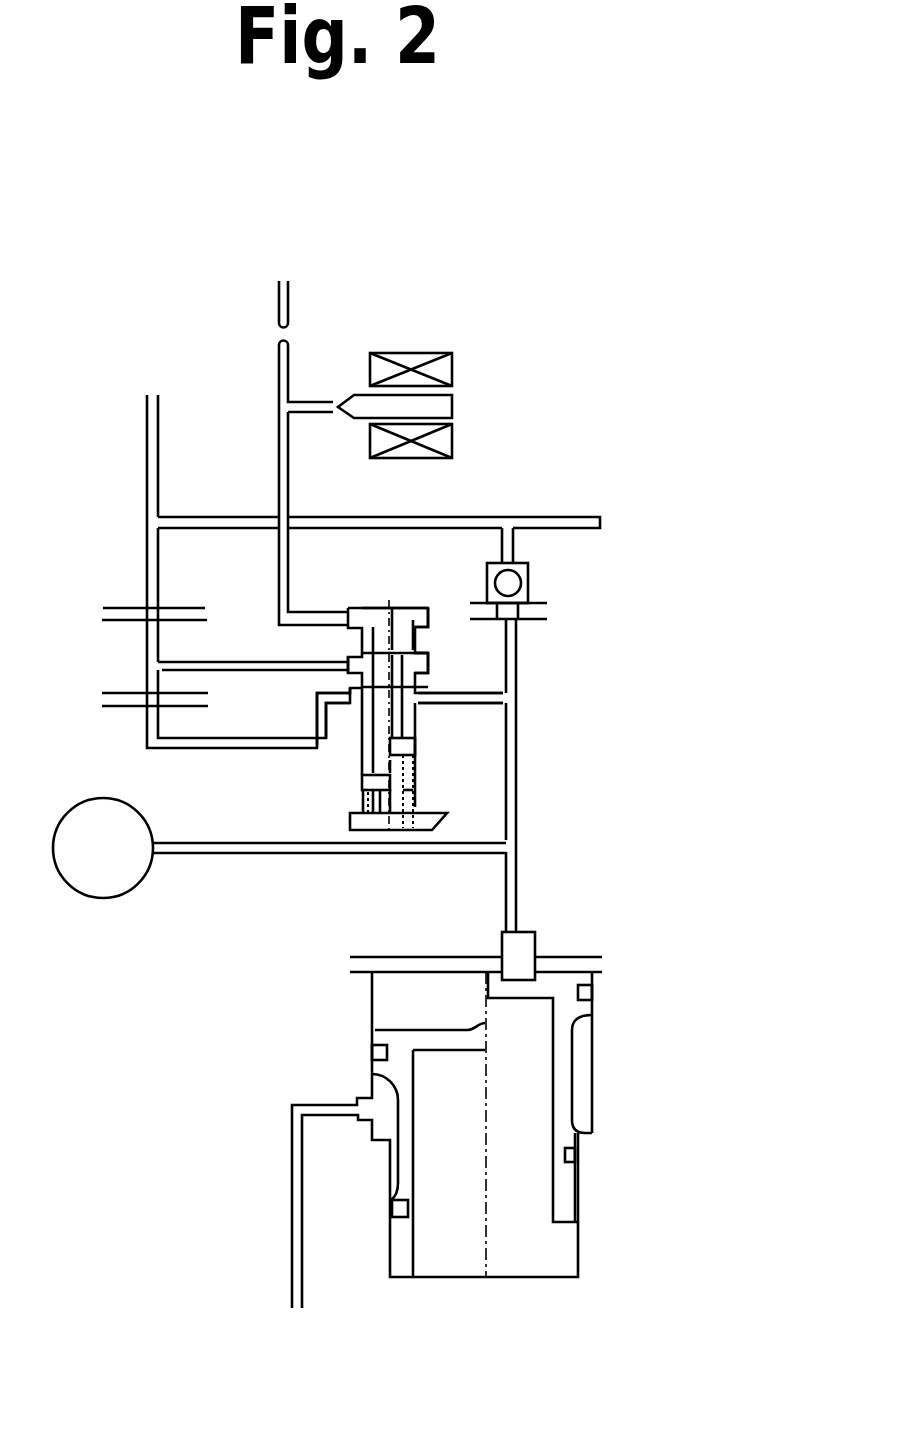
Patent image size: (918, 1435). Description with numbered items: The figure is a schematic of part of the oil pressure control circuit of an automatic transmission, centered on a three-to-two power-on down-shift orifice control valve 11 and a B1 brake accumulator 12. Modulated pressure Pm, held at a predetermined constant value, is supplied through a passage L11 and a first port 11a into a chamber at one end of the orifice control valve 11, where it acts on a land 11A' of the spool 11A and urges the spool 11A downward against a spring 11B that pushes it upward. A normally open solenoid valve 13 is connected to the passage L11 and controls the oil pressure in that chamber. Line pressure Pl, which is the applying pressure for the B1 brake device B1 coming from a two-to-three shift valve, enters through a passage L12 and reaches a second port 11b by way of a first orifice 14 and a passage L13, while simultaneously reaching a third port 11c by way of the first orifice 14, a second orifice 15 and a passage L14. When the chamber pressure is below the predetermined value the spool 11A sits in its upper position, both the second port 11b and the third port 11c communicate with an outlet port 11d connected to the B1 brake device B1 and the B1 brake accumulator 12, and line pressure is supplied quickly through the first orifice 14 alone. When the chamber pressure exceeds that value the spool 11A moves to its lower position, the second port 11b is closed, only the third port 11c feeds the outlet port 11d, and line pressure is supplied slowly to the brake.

The 3→2 power-on down-shift orifice control valve 11 is at (428, 749).
The first port 11a is at (372, 608).
The second port 11b is at (353, 655).
The third port 11c is at (357, 700).
The outlet port 11d is at (428, 703).
The spool 11A is at (523, 670).
The land 11A' is at (530, 620).
The spring 11B is at (418, 790).
The B1 brake accumulator 12 is at (603, 1061).
The solenoid valve 13 is at (420, 337).
The first orifice 14 is at (145, 622).
The second orifice 15 is at (145, 712).
The passage L11 is at (278, 462).
The passage L12 is at (145, 463).
The passage L13 is at (242, 660).
The passage L14 is at (225, 748).
The B1 brake device B1 is at (279, 848).
The modulated pressure Pm is at (280, 268).
The line pressure Pl is at (150, 382).